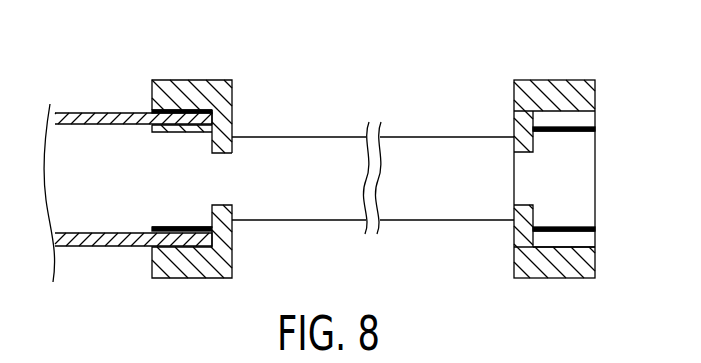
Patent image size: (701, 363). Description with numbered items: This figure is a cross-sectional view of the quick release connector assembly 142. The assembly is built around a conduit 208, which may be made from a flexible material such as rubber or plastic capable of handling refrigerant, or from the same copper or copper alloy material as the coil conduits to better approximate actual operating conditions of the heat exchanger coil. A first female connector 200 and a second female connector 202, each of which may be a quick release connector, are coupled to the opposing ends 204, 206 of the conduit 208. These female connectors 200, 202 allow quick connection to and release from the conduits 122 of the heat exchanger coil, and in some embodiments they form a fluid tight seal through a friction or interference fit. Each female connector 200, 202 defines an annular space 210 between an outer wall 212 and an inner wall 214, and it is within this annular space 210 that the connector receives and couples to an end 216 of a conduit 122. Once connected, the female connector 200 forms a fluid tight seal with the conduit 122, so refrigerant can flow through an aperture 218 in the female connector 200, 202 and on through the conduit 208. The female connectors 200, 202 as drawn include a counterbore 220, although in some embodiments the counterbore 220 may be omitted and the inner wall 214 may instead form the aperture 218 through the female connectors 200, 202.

The conduit 122 is at (91, 112).
The quick release connector assembly 142 is at (335, 61).
The first female connector 200 is at (191, 75).
The second female connector 202 is at (547, 76).
The end of conduit 204 is at (249, 99).
The end of conduit 206 is at (491, 97).
The conduit 208 is at (323, 221).
The annular space 210 is at (170, 110).
The outer wall 212 is at (166, 272).
The inner wall 214 is at (185, 228).
The end of conduit 216 is at (187, 248).
The aperture 218 is at (232, 178).
The counterbore 220 is at (197, 199).